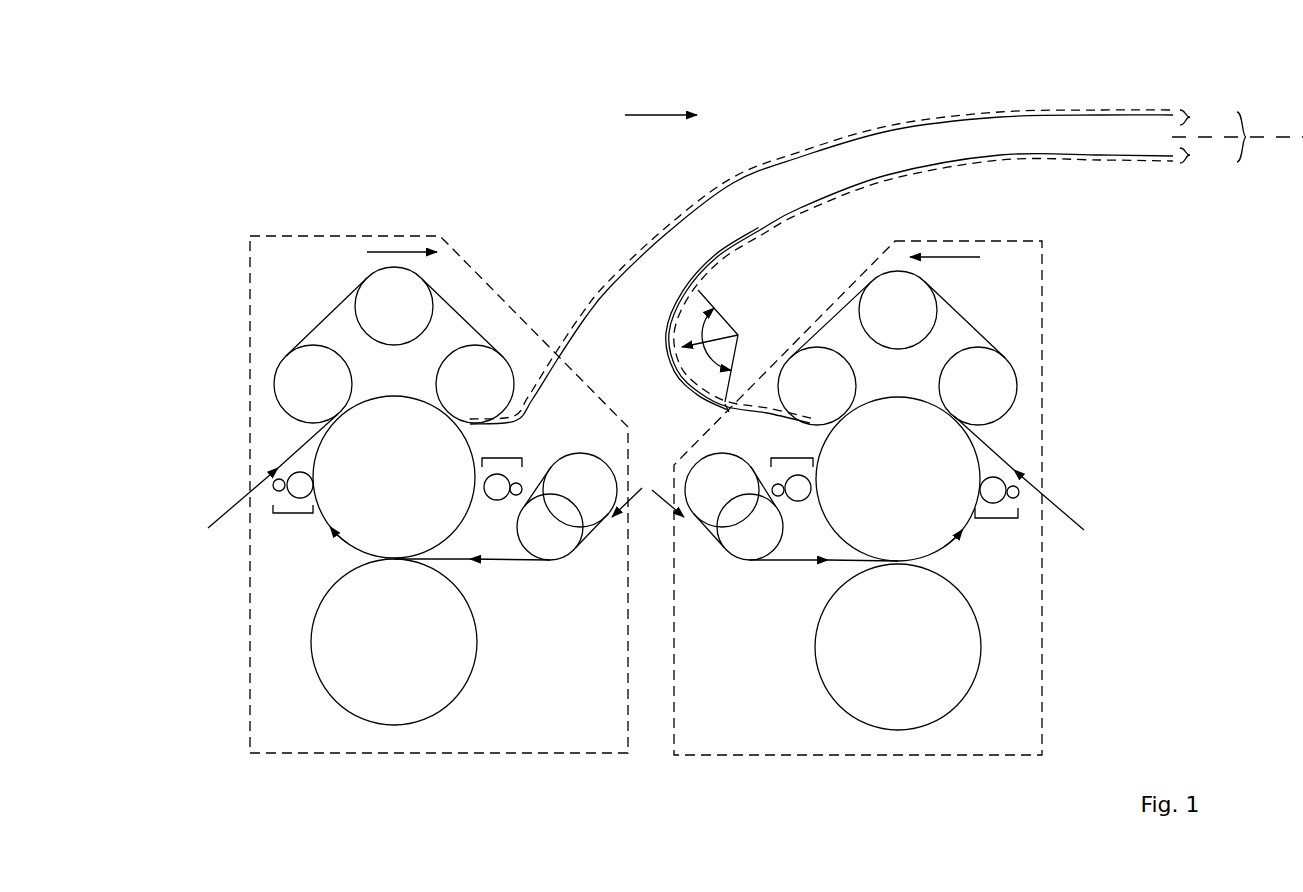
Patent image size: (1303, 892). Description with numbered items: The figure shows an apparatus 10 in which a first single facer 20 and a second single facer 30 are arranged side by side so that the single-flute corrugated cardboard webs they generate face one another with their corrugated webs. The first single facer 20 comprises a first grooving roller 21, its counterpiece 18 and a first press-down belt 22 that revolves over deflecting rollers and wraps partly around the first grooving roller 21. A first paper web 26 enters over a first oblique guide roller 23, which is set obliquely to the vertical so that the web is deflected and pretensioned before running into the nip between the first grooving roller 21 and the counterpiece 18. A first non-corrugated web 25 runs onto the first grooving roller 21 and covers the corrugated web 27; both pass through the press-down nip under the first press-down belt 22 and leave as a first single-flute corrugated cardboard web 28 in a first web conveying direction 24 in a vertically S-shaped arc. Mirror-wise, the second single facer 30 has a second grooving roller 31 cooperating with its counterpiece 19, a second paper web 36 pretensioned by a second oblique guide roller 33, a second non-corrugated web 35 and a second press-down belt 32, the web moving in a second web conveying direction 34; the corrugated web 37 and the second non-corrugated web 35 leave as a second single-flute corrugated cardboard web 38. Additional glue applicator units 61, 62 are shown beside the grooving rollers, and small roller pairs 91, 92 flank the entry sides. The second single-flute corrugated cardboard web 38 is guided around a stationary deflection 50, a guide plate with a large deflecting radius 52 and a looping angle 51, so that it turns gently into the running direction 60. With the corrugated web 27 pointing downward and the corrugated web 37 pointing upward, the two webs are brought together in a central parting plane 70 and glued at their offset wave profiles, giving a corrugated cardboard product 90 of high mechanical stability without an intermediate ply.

The apparatus 10 is at (240, 193).
The counterpiece 18 is at (383, 656).
The counterpiece 19 is at (887, 656).
The first single facer 20 is at (238, 633).
The first grooving roller 21 is at (383, 490).
The first press-down belt 22 is at (328, 314).
The first oblique guide roller 23 is at (539, 540).
The first web conveying direction 24 is at (393, 245).
The first non-corrugated web 25 is at (230, 508).
The first paper web 26 is at (603, 545).
The corrugated web 27 is at (814, 156).
The first single-flute corrugated cardboard web 28 is at (1192, 117).
The second single facer 30 is at (1055, 634).
The second grooving roller 31 is at (887, 490).
The second press-down belt 32 is at (968, 320).
The second oblique guide roller 33 is at (739, 540).
The second web conveying direction 34 is at (950, 250).
The second non-corrugated web 35 is at (1065, 510).
The second paper web 36 is at (699, 542).
The corrugated web 37 is at (1058, 152).
The second single-flute corrugated cardboard web 38 is at (1192, 156).
The deflection 50 is at (728, 259).
The looping angle 51 is at (678, 328).
The deflecting radius 52 is at (696, 350).
The running direction 60 is at (652, 107).
The additional glue applicator unit 61 is at (500, 455).
The additional glue applicator unit 62 is at (792, 455).
The parting plane 70 is at (1290, 136).
The corrugated cardboard product 90 is at (1246, 137).
The guide rollers 91 is at (293, 513).
The guide rollers 92 is at (997, 518).